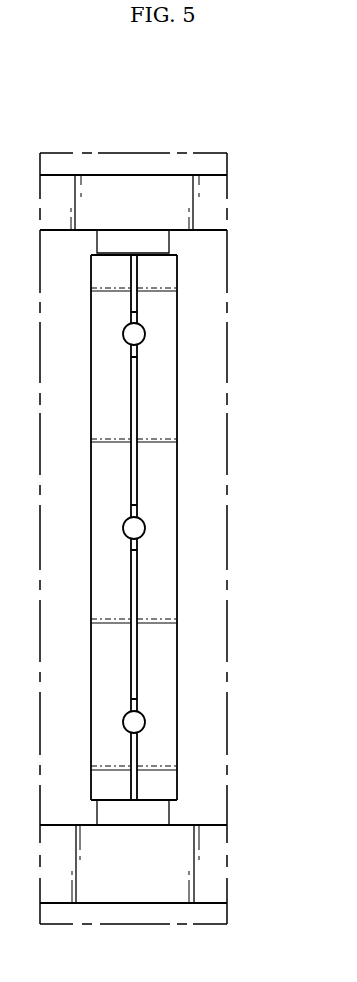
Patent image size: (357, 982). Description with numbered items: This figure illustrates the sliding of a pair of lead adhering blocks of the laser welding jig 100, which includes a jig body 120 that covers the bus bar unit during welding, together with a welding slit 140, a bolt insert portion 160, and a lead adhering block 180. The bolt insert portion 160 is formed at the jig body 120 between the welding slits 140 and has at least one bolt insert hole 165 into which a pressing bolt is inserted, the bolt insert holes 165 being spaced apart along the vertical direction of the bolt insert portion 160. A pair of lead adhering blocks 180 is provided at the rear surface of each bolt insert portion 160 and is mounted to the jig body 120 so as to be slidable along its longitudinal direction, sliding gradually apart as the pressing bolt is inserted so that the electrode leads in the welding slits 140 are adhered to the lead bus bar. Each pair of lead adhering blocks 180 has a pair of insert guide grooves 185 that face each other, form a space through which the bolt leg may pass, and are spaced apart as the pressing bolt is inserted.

The laser welding jig 100 is at (57, 110).
The jig body 120 is at (216, 203).
The welding slit 140 is at (207, 492).
The bolt insert portion 160 is at (135, 675).
The bolt insert hole 165 is at (132, 744).
The lead adhering block 180 is at (162, 387).
The insert guide groove 185 is at (145, 334).